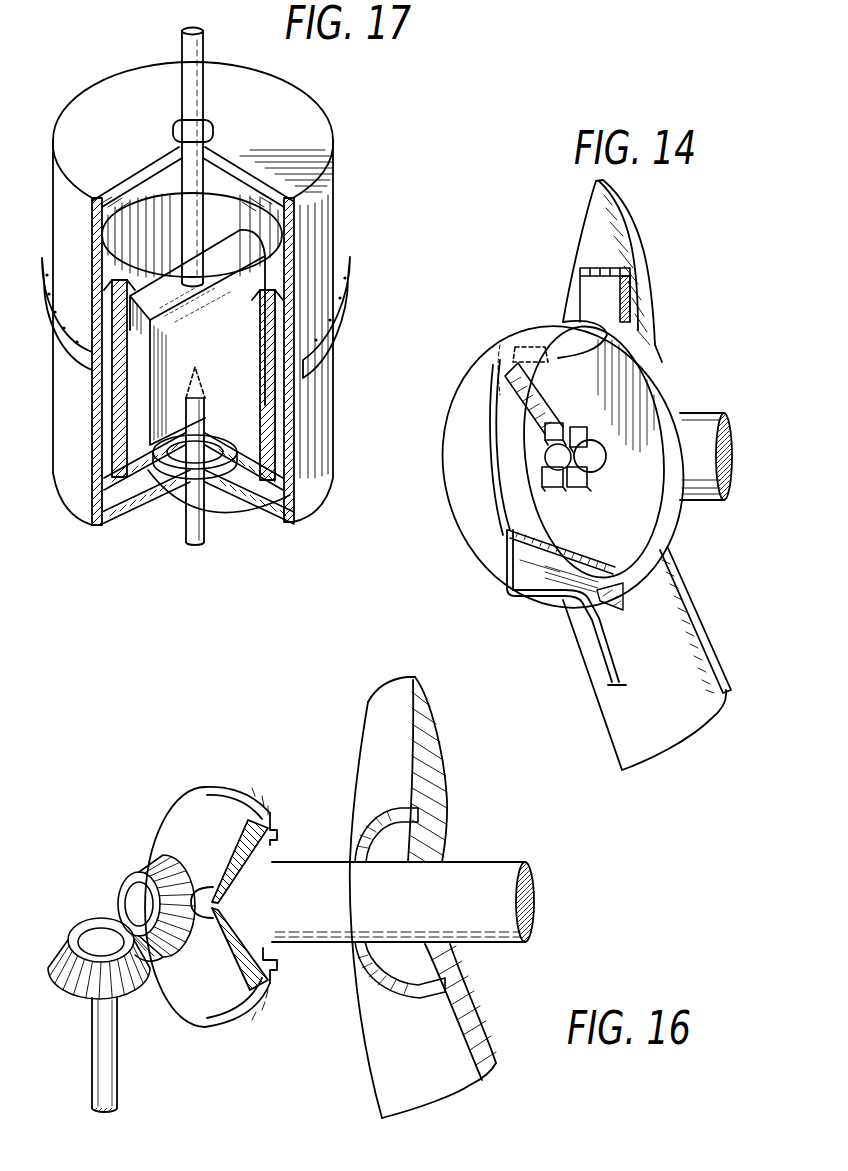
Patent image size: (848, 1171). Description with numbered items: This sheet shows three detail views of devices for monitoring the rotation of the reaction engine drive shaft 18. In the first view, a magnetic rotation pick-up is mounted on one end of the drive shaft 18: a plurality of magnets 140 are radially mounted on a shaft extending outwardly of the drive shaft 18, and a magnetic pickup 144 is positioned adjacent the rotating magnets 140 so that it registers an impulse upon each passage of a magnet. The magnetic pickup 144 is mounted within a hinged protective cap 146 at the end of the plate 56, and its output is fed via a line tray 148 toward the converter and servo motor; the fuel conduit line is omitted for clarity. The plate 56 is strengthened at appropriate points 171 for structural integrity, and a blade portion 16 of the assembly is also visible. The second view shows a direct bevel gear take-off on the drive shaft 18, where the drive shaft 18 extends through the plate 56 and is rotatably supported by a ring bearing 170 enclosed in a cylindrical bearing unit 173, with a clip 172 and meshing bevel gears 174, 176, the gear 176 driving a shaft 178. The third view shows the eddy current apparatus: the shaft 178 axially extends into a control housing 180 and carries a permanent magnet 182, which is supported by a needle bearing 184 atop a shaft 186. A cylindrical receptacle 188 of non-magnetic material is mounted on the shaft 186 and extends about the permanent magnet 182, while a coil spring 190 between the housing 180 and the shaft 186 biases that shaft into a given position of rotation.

In FIG. 14, the blade 16 is at (684, 744).
In FIG. 14, the drive shaft 18 is at (563, 457).
In FIG. 16, the drive shaft 18 is at (136, 900).
In FIG. 14, the plate 56 is at (608, 224).
In FIG. 16, the plate 56 is at (403, 677).
In FIG. 14, the magnets 140 is at (568, 425).
In FIG. 14, the magnetic pickup 144 is at (545, 382).
In FIG. 14, the hinged protective cap 146 is at (444, 458).
In FIG. 14, the line tray 148 is at (608, 672).
In FIG. 16, the ring bearing 170 is at (266, 836).
In FIG. 14, the strengthened points 171 is at (639, 254).
In FIG. 16, the strengthened points 171 is at (450, 797).
In FIG. 16, the clip 172 is at (370, 826).
In FIG. 16, the cylindrical bearing unit 173 is at (480, 947).
In FIG. 16, the bevel gear 174 is at (143, 866).
In FIG. 16, the bevel gear 176 is at (60, 972).
In FIG. 17, the shaft 178 is at (182, 47).
In FIG. 16, the shaft 178 is at (118, 1097).
In FIG. 17, the control housing 180 is at (328, 133).
In FIG. 17, the permanent magnet 182 is at (230, 351).
In FIG. 17, the needle bearing 184 is at (205, 372).
In FIG. 17, the shaft 186 is at (207, 520).
In FIG. 17, the cylindrical receptacle 188 is at (291, 297).
In FIG. 17, the coil spring 190 is at (165, 493).